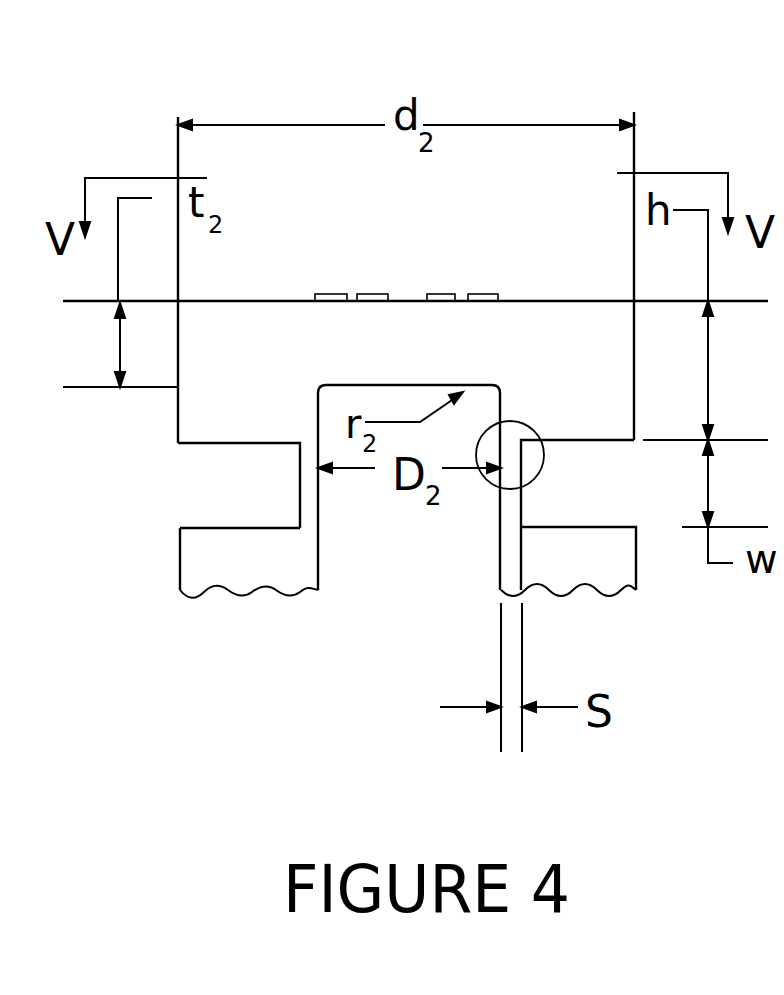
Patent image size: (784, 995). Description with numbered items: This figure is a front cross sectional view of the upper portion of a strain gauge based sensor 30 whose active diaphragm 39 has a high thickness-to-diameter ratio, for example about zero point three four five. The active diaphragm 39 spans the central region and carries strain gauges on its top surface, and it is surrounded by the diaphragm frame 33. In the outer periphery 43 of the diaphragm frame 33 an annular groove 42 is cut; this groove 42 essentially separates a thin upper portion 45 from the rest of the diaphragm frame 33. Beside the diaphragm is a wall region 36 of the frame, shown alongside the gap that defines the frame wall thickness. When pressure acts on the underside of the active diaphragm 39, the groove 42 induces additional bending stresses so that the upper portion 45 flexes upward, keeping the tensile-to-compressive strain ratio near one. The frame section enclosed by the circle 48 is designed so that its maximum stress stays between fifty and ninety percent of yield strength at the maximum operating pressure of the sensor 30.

The strain gauge based sensor 30 is at (675, 80).
The diaphragm frame 33 is at (245, 567).
The trench gap 36 is at (500, 502).
The active diaphragm 39 is at (400, 370).
The annular groove 42 is at (200, 493).
The outer periphery 43 is at (180, 562).
The upper portion 45 is at (203, 424).
The circle 48 is at (543, 448).